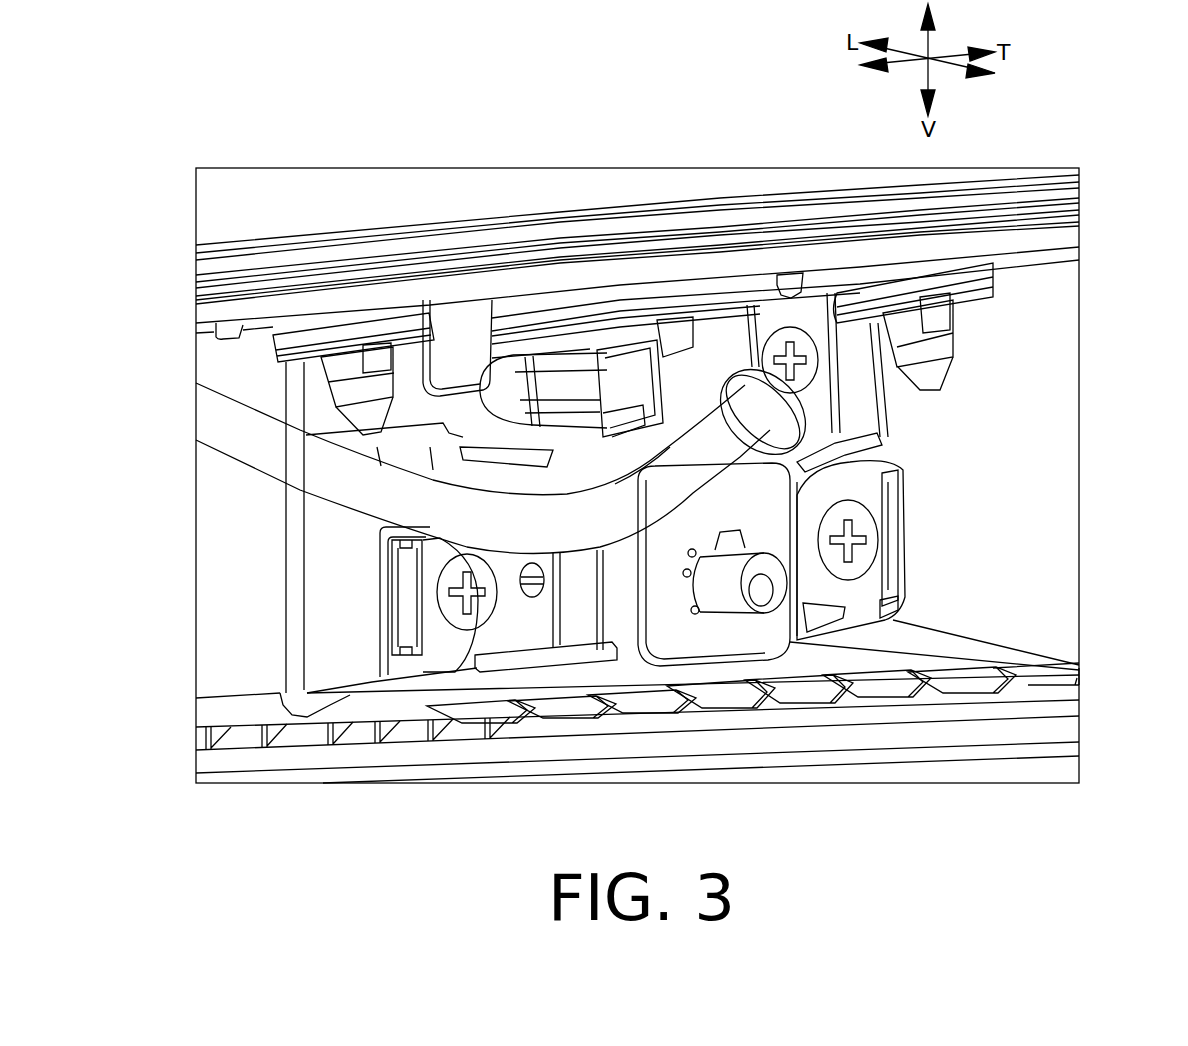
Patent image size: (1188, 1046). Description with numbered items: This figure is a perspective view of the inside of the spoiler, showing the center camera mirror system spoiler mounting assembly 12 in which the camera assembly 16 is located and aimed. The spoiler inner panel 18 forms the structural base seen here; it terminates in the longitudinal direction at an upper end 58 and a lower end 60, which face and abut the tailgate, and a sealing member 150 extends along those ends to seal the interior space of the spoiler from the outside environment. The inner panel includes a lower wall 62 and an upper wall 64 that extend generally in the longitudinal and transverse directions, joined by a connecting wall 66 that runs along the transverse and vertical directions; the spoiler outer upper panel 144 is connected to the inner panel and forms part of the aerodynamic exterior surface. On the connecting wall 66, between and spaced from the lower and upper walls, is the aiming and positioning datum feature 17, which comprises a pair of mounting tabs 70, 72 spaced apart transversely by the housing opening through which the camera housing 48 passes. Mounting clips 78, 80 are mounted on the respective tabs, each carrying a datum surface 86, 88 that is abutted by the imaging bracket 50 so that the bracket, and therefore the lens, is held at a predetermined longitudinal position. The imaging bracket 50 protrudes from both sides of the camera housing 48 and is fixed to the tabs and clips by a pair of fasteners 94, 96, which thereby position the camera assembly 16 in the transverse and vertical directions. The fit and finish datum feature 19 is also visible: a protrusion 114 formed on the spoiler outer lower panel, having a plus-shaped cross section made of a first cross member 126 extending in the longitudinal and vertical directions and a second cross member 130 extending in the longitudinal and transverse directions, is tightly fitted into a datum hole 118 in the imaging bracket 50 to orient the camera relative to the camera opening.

The mounting assembly 12 is at (1084, 372).
The camera assembly 16 is at (912, 494).
The aiming and positioning datum feature 17 is at (644, 562).
The spoiler inner panel 18 is at (897, 748).
The fit and finish datum feature 19 is at (509, 594).
The camera housing 48 is at (722, 643).
The imaging bracket 50 is at (453, 640).
The upper end 58 is at (688, 243).
The lower end 60 is at (1063, 705).
The lower wall 62 is at (950, 663).
The upper wall 64 is at (1076, 208).
The connecting wall 66 is at (1063, 282).
The mounting tab 70 is at (380, 540).
The mounting tab 72 is at (853, 457).
The mounting clip 78 is at (335, 597).
The mounting clip 80 is at (961, 538).
The datum surface 86 is at (410, 580).
The datum surface 88 is at (887, 520).
The fastener 94 is at (453, 600).
The fastener 96 is at (870, 545).
The protrusion 114 is at (560, 693).
The datum hole 118 is at (530, 563).
The first cross member 126 is at (578, 638).
The second cross member 130 is at (552, 600).
The spoiler outer upper panel 144 is at (343, 177).
The sealing member 150 is at (205, 312).